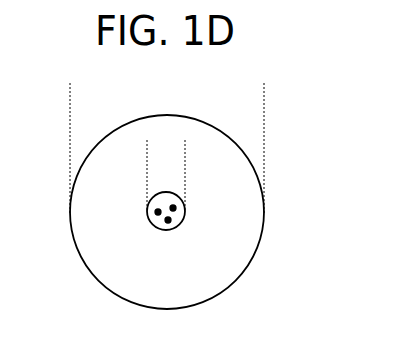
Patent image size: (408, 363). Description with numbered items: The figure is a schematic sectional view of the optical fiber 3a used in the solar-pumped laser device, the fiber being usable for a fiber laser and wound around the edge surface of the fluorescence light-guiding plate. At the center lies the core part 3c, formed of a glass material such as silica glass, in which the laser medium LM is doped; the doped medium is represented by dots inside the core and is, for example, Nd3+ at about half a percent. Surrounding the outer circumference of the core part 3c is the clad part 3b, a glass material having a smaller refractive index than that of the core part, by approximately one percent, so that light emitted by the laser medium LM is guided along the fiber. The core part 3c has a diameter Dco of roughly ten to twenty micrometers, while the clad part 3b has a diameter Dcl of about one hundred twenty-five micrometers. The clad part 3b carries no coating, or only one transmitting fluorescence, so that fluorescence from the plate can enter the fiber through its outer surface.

The optical fiber 3a is at (73, 232).
The clad part 3b is at (233, 175).
The core part 3c is at (147, 219).
The laser medium LM is at (177, 210).
The clad part diameter Dcl is at (264, 100).
The core part diameter Dco is at (185, 149).